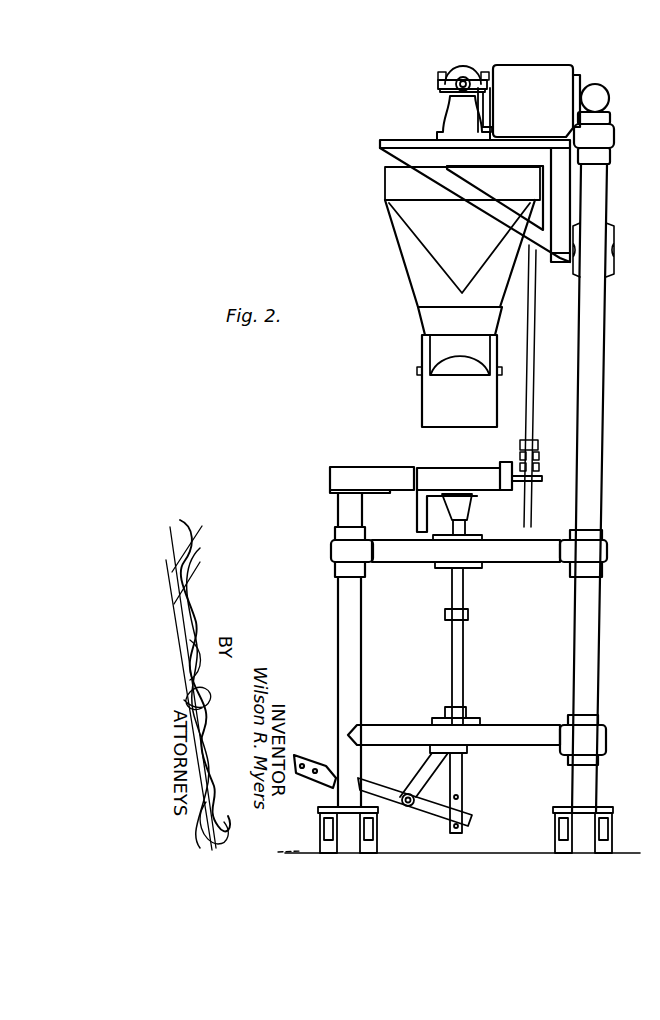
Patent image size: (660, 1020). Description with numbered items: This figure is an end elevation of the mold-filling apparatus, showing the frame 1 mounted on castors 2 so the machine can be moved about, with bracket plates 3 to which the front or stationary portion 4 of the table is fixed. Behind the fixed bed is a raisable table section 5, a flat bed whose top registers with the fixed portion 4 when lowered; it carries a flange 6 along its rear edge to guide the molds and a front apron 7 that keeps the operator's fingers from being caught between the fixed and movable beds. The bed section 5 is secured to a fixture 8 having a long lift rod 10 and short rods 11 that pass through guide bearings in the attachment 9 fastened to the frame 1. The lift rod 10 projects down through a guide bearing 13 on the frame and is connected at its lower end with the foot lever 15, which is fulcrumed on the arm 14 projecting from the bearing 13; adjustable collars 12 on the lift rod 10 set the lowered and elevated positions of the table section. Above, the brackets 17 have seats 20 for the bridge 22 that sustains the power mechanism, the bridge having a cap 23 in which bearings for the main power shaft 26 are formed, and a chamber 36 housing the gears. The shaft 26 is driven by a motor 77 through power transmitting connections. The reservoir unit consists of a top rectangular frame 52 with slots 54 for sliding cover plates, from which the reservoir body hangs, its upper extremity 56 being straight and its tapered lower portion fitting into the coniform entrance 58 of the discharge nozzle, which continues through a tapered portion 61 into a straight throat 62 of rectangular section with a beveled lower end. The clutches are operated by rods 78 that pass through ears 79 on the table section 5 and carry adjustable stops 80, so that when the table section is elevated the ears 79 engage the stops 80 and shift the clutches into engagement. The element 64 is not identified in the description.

The frame 1 is at (604, 193).
The castors 2 is at (380, 848).
The bracket plates 3 is at (336, 494).
The stationary portion of the table 4 is at (330, 477).
The raisable table section 5 is at (468, 468).
The flange 6 is at (498, 454).
The front apron 7 is at (418, 511).
The fixture 8 is at (471, 498).
The attachment 9 is at (440, 568).
The lift rod 10 is at (452, 637).
The short rods 11 is at (465, 525).
The adjustable collars 12 is at (473, 537).
The guide bearing 13 is at (468, 712).
The arm 14 is at (419, 779).
The foot lever 15 is at (430, 805).
The brackets 17 is at (475, 205).
The seats 20 is at (480, 150).
The bridge 22 is at (455, 114).
The cap 23 is at (438, 76).
The main power shaft 26 is at (460, 87).
The chamber 36 is at (486, 99).
The top rectangular frame 52 is at (384, 150).
The slots 54 is at (411, 266).
The upper extremity of the reservoir 56 is at (385, 185).
The coniform entrance 58 is at (420, 320).
The tapered portion 61 is at (430, 356).
The straight throat 62 is at (428, 412).
The trunnion 64 is at (416, 371).
The motor 77 is at (536, 101).
The rods 78 is at (533, 421).
The ears 79 is at (538, 481).
The adjustable stops 80 is at (539, 446).